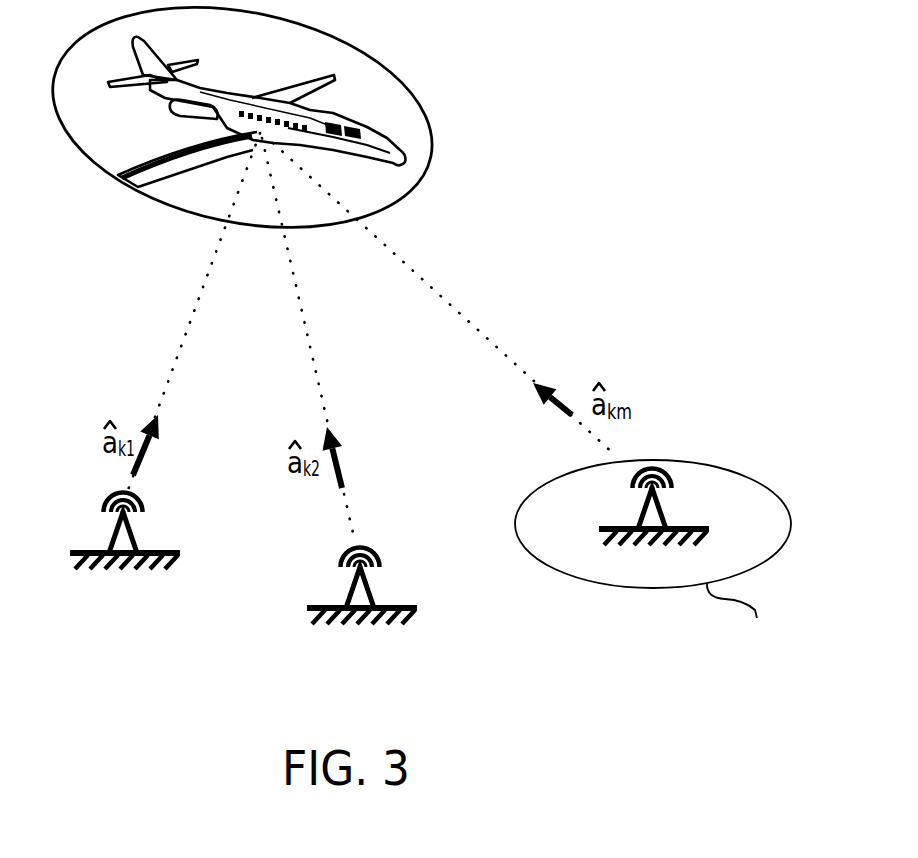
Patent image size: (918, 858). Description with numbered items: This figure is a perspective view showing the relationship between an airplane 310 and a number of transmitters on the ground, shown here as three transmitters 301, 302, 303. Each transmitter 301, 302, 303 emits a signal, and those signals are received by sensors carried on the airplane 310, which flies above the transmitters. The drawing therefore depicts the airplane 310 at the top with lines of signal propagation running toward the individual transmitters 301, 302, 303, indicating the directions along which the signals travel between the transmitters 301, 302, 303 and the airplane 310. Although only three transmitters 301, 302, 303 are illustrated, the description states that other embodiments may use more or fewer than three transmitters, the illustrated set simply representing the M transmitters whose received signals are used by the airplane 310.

The airplane 310 is at (380, 137).
The transmitter 301 is at (116, 519).
The transmitter 302 is at (355, 574).
The transmitter 303 is at (663, 515).